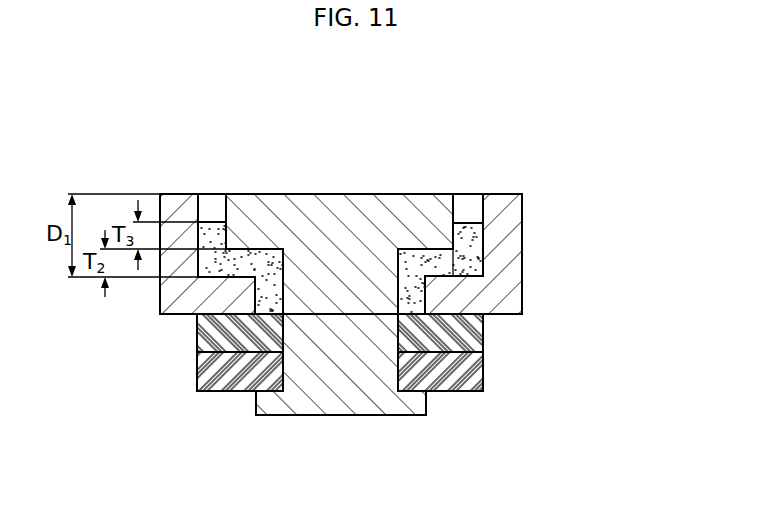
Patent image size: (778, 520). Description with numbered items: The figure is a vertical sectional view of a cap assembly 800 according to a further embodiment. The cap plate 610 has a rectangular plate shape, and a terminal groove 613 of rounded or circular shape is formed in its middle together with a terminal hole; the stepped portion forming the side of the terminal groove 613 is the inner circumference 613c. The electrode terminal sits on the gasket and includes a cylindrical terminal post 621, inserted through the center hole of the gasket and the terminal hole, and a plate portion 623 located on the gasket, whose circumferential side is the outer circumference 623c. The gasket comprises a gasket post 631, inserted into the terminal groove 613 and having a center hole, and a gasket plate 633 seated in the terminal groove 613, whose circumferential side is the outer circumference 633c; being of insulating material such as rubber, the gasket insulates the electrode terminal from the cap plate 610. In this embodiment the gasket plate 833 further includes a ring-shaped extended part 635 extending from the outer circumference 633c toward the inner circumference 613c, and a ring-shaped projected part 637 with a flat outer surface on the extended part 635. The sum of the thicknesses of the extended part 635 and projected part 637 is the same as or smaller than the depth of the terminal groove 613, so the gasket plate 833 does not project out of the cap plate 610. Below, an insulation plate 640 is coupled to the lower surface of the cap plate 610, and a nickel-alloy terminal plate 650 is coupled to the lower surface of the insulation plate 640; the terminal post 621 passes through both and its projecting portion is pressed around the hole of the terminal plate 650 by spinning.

The cap assembly 800 is at (585, 185).
The cap plate 610 is at (517, 248).
The terminal groove 613 is at (203, 193).
The inner circumference 613c is at (215, 222).
The terminal post 621 is at (326, 381).
The plate portion 623 is at (298, 225).
The outer circumference 623c is at (222, 215).
The gasket post 631 is at (265, 295).
The gasket plate 633 is at (426, 258).
The outer circumference 633c is at (447, 272).
The extended part 635 is at (483, 255).
The projected part 637 is at (468, 230).
The gasket plate 833 is at (423, 114).
The insulation plate 640 is at (475, 343).
The terminal plate 650 is at (473, 376).